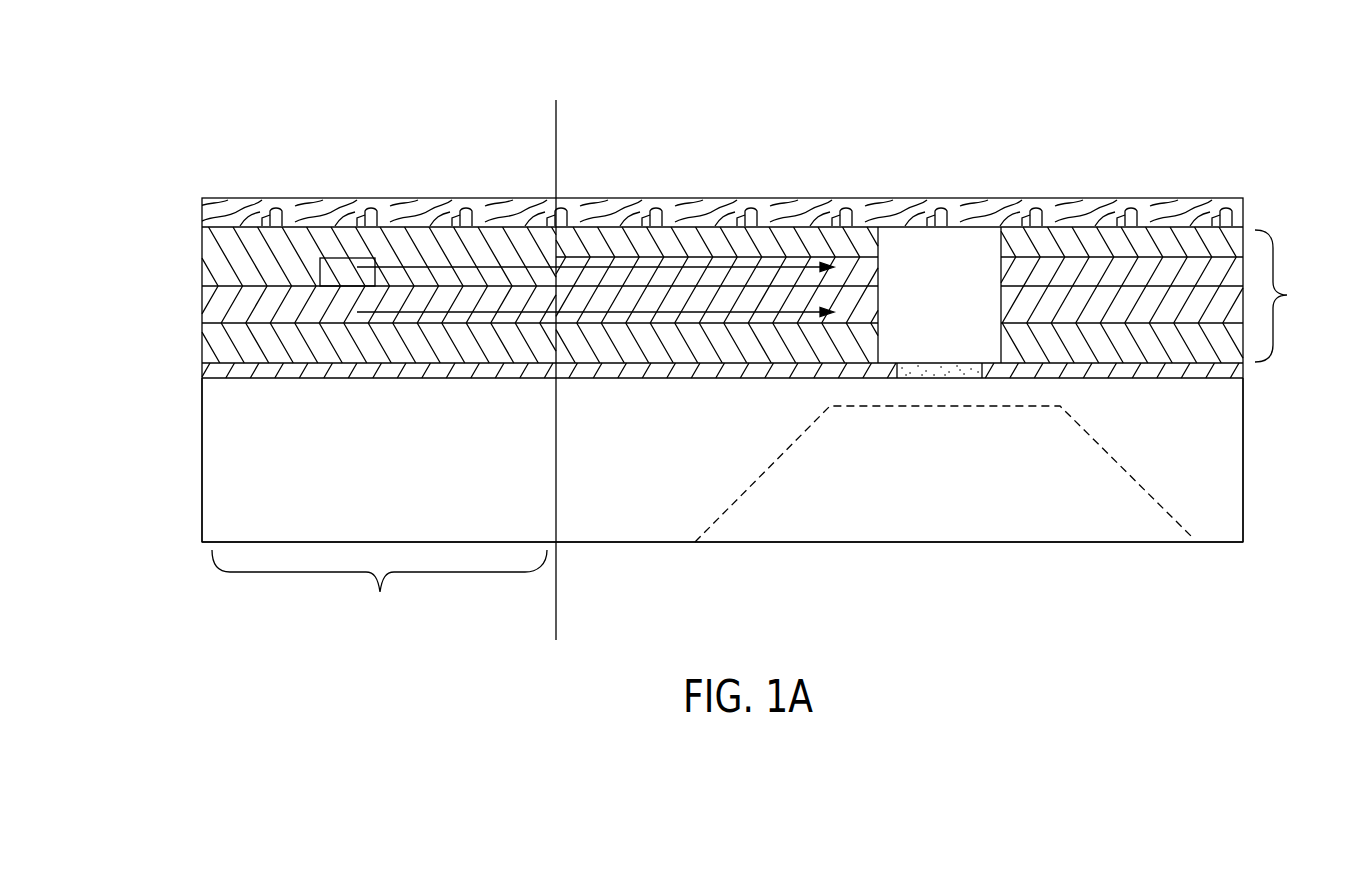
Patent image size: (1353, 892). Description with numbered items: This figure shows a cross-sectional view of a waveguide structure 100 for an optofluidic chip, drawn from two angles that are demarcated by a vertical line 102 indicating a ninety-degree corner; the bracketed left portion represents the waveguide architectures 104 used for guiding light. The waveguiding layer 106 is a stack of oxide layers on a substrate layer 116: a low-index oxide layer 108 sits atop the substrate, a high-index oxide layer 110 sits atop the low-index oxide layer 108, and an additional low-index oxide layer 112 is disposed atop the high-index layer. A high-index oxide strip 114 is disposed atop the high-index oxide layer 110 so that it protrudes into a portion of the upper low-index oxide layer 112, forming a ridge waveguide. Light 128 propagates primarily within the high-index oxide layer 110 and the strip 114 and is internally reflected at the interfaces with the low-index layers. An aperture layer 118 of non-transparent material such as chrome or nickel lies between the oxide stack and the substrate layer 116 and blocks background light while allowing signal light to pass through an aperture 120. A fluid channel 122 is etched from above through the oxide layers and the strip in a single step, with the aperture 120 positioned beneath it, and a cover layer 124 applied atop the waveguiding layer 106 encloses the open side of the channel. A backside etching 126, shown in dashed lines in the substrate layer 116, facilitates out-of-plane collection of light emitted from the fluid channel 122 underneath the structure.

The waveguide structure 100 is at (1258, 101).
The vertical line 102 is at (558, 160).
The waveguide architectures 104 is at (379, 590).
The waveguiding layer 106 is at (1287, 296).
The low-index oxide layer 108 is at (213, 353).
The high-index oxide layer 110 is at (213, 307).
The low-index oxide layer 112 is at (213, 258).
The high-index oxide strip 114 is at (352, 268).
The substrate layer 116 is at (1233, 457).
The aperture layer 118 is at (1243, 368).
The aperture 120 is at (935, 362).
The fluid channel 122 is at (938, 241).
The cover layer 124 is at (1113, 212).
The backside etching 126 is at (1180, 527).
The light 128 is at (378, 307).